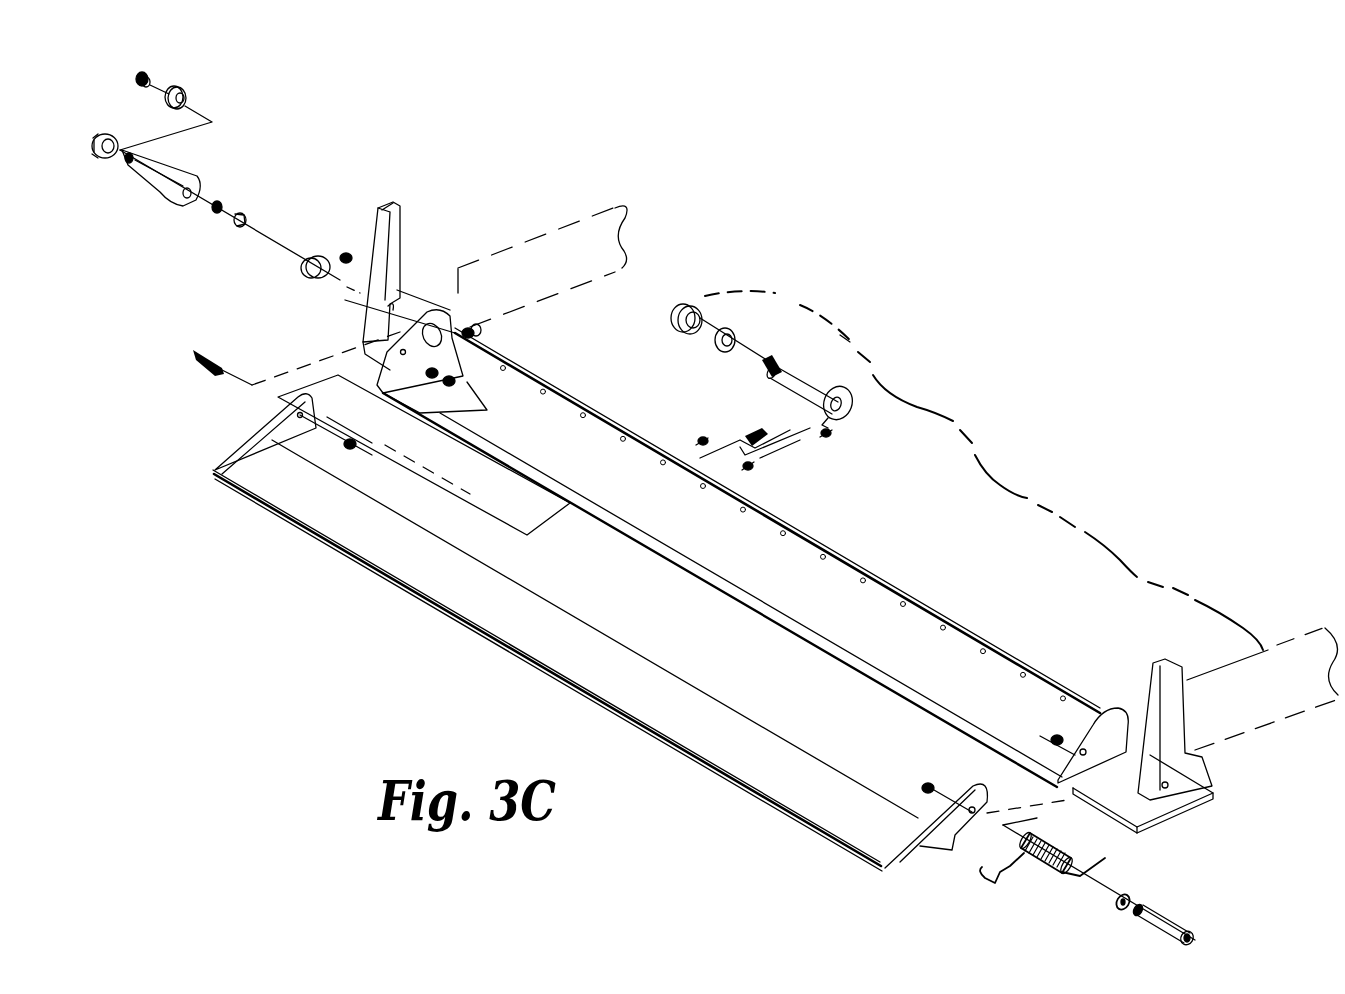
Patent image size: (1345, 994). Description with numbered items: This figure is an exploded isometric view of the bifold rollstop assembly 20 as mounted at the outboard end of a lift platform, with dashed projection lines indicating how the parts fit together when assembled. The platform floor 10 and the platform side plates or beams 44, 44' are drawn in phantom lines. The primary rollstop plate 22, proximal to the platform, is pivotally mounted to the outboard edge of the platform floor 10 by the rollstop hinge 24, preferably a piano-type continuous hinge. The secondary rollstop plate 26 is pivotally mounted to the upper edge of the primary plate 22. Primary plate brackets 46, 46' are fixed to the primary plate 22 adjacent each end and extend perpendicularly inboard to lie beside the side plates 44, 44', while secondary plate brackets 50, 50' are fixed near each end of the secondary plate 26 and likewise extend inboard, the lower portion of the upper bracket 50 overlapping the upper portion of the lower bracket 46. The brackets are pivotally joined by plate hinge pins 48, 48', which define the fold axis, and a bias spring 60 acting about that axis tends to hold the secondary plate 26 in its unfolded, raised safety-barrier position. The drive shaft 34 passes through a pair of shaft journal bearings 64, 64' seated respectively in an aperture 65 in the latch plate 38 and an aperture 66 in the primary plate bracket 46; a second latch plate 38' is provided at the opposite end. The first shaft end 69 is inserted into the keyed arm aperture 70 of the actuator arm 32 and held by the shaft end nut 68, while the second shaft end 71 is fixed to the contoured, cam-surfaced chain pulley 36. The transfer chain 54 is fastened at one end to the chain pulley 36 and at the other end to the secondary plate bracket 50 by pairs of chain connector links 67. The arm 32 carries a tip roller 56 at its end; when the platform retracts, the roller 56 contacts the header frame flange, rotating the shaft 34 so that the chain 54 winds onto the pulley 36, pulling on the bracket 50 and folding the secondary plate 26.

The platform floor 10 is at (942, 514).
The rollstop assembly 20 is at (350, 600).
The primary rollstop plate 22 is at (769, 568).
The rollstop hinge 24 is at (815, 540).
The secondary rollstop plate 26 is at (562, 647).
The actuator arm 32 is at (165, 208).
The drive shaft 34 is at (808, 365).
The chain pulley 36 is at (860, 400).
The latch plate 38 is at (411, 255).
The latch plate 38' is at (1175, 746).
The platform side plate 44 is at (542, 266).
The platform side plate 44' is at (1262, 689).
The primary plate bracket 46 is at (433, 302).
The primary plate bracket 46' is at (1084, 701).
The plate hinge pin 48 is at (276, 332).
The plate hinge pin 48' is at (1099, 882).
The secondary plate bracket 50 is at (237, 434).
The secondary plate bracket 50' is at (928, 796).
The transfer chain 54 is at (752, 432).
The tip roller 56 is at (190, 95).
The bias spring 60 is at (1035, 862).
The shaft journal bearing 64 is at (300, 225).
The shaft journal bearing 64' is at (696, 287).
The aperture 65 is at (375, 303).
The aperture 66 is at (457, 370).
The chain connector links 67 is at (700, 442).
The shaft end nut 68 is at (95, 136).
The first shaft end 69 is at (772, 355).
The keyed arm aperture 70 is at (200, 185).
The second shaft end 71 is at (860, 345).